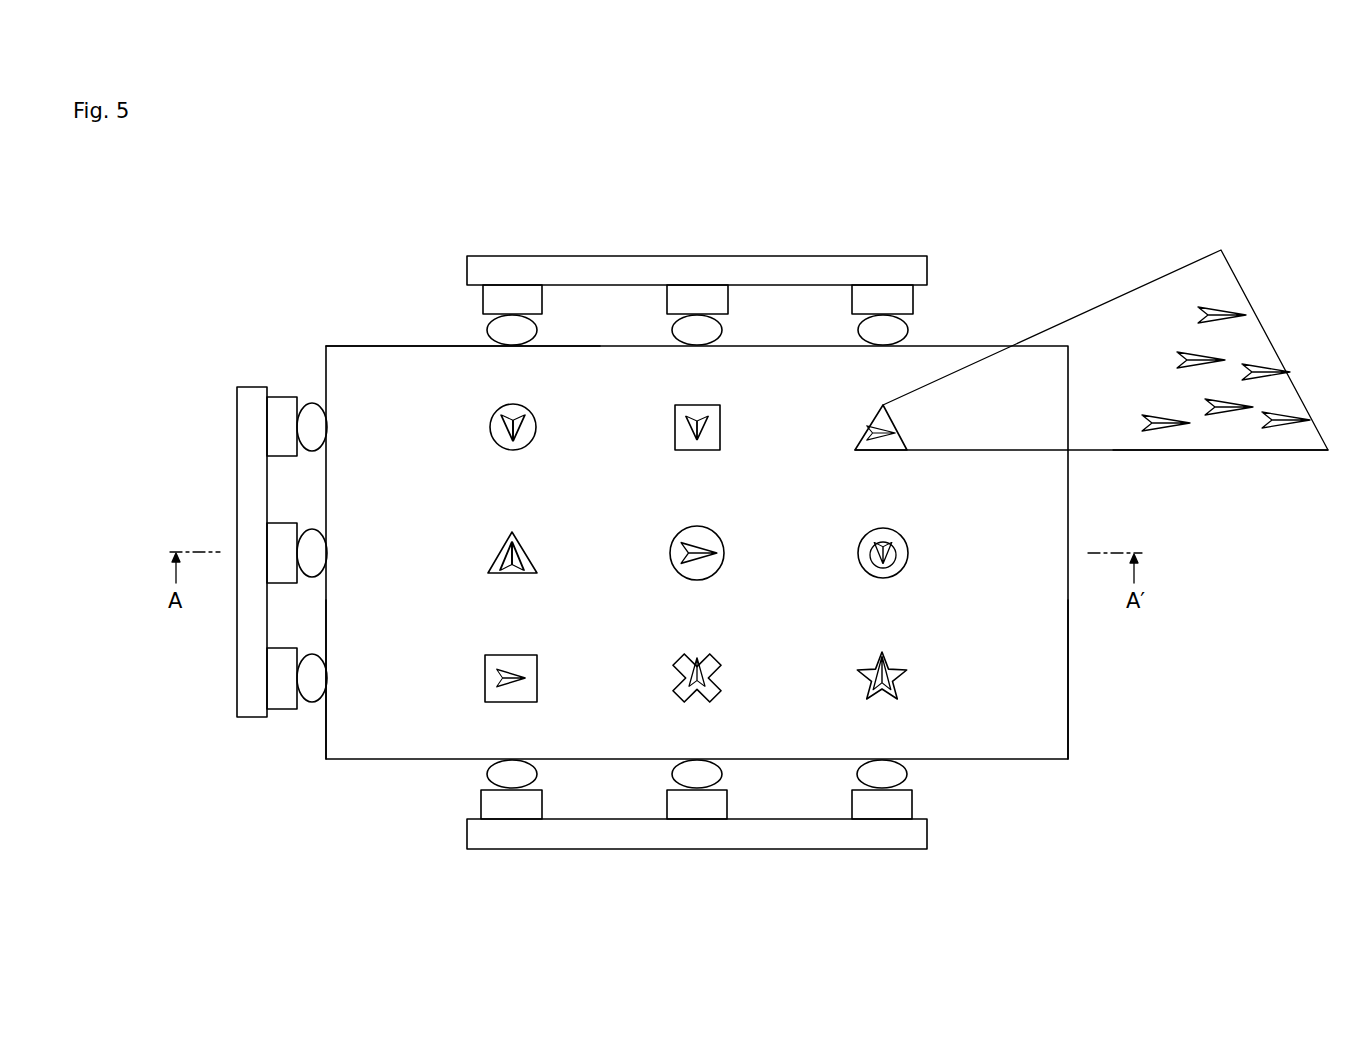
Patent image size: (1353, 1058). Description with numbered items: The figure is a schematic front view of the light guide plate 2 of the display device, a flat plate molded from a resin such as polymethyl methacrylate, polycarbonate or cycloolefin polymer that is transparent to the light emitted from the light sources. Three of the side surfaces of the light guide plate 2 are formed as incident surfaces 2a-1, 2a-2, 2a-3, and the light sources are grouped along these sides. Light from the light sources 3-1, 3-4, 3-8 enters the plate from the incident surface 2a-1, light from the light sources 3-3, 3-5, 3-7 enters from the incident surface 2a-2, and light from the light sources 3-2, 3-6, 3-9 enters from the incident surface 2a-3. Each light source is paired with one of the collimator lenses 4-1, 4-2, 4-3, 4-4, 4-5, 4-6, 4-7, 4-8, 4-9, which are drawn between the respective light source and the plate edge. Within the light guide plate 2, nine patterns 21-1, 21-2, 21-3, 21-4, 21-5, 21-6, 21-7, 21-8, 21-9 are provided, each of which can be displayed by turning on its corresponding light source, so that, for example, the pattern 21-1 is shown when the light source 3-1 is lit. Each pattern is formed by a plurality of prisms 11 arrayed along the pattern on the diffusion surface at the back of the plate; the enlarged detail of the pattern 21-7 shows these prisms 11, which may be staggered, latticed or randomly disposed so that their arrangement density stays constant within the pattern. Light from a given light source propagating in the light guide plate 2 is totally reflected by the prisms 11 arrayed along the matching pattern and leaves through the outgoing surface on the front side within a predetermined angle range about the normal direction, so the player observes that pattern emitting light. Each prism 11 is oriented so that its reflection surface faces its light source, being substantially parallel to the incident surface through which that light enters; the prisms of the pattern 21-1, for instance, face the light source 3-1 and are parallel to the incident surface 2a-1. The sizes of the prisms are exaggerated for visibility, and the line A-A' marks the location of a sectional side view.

The light guide plate 2 is at (393, 760).
The incident surface 2a-1 is at (357, 346).
The incident surface 2a-2 is at (326, 730).
The incident surface 2a-3 is at (1046, 765).
The light source 3-1 is at (542, 300).
The light source 3-2 is at (542, 805).
The light source 3-3 is at (282, 681).
The light source 3-4 is at (728, 300).
The light source 3-5 is at (282, 552).
The light source 3-6 is at (727, 805).
The light source 3-7 is at (282, 428).
The light source 3-8 is at (913, 300).
The light source 3-9 is at (912, 805).
The collimator lens 4-1 is at (537, 330).
The collimator lens 4-2 is at (537, 774).
The collimator lens 4-3 is at (312, 654).
The collimator lens 4-4 is at (722, 330).
The collimator lens 4-5 is at (312, 529).
The collimator lens 4-6 is at (722, 774).
The collimator lens 4-7 is at (312, 403).
The collimator lens 4-8 is at (908, 330).
The collimator lens 4-9 is at (907, 774).
The prism 11 is at (1152, 431).
The pattern 21-1 is at (536, 427).
The pattern 21-2 is at (530, 553).
The pattern 21-3 is at (537, 678).
The pattern 21-4 is at (720, 427).
The pattern 21-5 is at (724, 553).
The pattern 21-6 is at (720, 678).
The pattern 21-7 is at (900, 427).
The pattern 21-8 is at (908, 553).
The pattern 21-9 is at (905, 678).